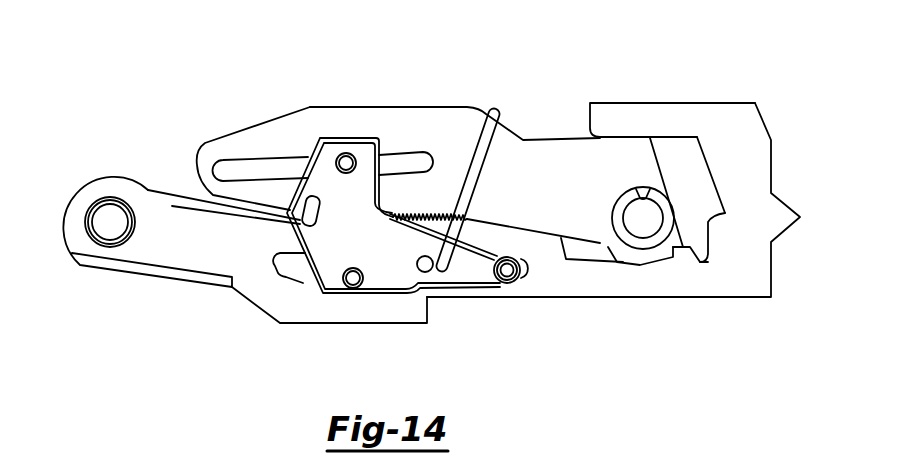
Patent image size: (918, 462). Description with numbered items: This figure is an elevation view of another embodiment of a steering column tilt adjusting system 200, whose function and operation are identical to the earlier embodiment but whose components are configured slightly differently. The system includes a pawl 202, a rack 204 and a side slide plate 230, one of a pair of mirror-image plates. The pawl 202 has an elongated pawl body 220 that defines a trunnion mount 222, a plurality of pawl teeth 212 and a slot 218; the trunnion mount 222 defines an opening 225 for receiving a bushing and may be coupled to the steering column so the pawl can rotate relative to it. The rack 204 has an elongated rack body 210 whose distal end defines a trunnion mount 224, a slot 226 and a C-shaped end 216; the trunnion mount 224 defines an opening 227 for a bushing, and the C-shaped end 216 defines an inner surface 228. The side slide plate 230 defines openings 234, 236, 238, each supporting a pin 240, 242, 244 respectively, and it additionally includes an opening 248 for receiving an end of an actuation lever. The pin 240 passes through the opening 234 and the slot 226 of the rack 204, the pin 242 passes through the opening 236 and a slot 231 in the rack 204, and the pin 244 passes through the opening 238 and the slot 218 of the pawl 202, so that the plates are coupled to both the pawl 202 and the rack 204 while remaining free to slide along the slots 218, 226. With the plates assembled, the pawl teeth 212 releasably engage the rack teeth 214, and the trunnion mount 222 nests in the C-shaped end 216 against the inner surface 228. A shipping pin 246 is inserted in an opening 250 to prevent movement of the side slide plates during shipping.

The steering column tilt adjusting system 200 is at (683, 76).
The pawl 202 is at (402, 105).
The rack 204 is at (263, 320).
The rack body 210 is at (412, 324).
The pawl teeth 212 is at (433, 213).
The rack teeth 214 is at (427, 225).
The C-shaped end 216 is at (634, 103).
The slot 218 is at (418, 160).
The pawl body 220 is at (575, 196).
The trunnion mount 222 is at (620, 207).
The trunnion mount 224 is at (62, 223).
The opening 225 is at (647, 256).
The slot 226 is at (280, 267).
The opening 227 is at (117, 247).
The inner surface 228 is at (706, 250).
The side slide plate 230 is at (338, 240).
The slot 231 is at (528, 278).
The opening 234 is at (355, 288).
The opening 236 is at (503, 283).
The opening 238 is at (336, 157).
The pin 240 is at (344, 280).
The pin 242 is at (510, 253).
The pin 244 is at (346, 153).
The shipping pin 246 is at (499, 114).
The opening 248 is at (305, 212).
The opening 250 is at (428, 270).